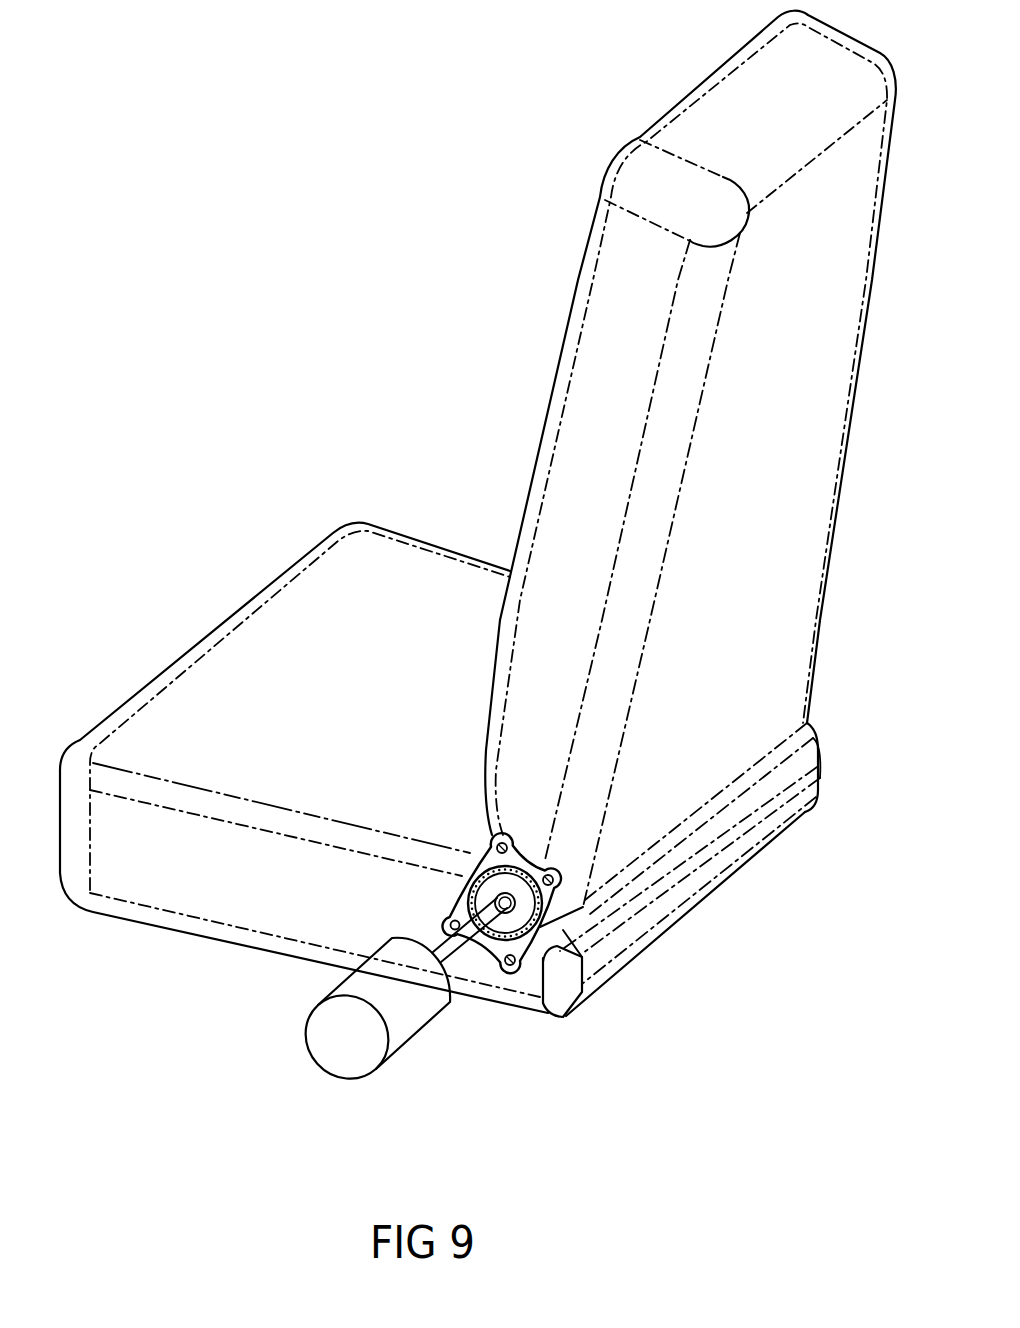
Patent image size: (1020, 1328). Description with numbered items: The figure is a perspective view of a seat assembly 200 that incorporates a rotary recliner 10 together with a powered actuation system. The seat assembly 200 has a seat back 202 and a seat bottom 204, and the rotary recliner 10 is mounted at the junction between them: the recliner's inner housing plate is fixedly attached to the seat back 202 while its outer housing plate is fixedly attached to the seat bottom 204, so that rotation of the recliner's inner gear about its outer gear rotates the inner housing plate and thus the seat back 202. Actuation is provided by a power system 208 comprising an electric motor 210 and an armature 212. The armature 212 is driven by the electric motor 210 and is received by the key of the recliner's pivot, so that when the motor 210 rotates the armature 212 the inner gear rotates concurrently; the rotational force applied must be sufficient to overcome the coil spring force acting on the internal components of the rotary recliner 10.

The seat assembly 200 is at (217, 193).
The seat back 202 is at (641, 118).
The seat bottom 204 is at (209, 619).
The rotary recliner 10 is at (484, 829).
The power system 208 is at (270, 1013).
The electric motor 210 is at (404, 1033).
The armature 212 is at (460, 955).